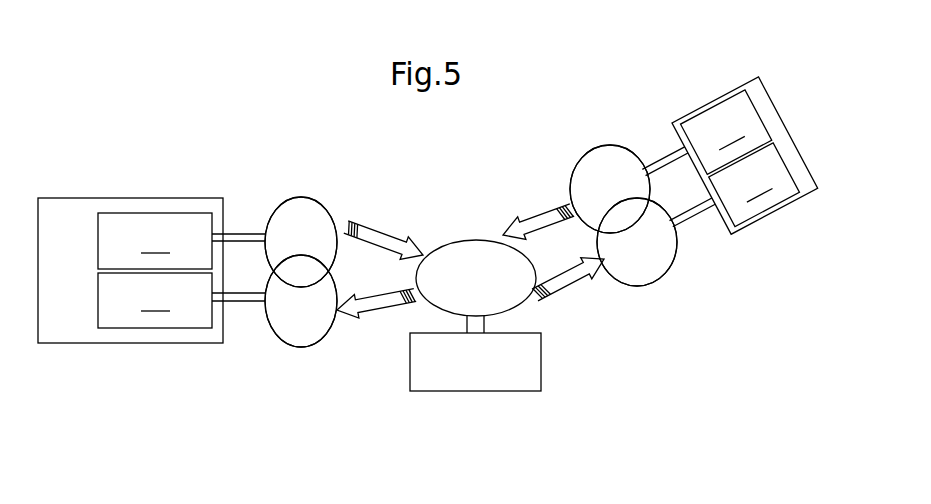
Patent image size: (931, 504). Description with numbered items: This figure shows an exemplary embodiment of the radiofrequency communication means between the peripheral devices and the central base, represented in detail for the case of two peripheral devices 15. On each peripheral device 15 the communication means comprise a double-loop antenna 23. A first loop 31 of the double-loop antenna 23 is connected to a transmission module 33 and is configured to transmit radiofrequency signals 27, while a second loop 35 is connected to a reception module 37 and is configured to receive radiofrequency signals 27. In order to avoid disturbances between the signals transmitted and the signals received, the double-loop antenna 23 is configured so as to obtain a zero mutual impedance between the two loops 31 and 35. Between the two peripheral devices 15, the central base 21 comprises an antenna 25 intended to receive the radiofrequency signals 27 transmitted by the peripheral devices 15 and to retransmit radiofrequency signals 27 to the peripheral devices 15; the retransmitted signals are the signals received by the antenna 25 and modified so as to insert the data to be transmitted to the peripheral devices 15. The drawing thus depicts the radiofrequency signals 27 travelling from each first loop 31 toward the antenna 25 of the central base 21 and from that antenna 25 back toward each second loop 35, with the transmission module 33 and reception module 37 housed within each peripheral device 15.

The peripheral device 15 is at (160, 197).
The central base 21 is at (510, 394).
The double-loop antenna 23 is at (303, 197).
The antenna 25 is at (475, 240).
The radiofrequency signals 27 is at (375, 227).
The first loop 31 is at (333, 212).
The transmission module 33 is at (435, 179).
The second loop 35 is at (303, 347).
The reception module 37 is at (448, 235).